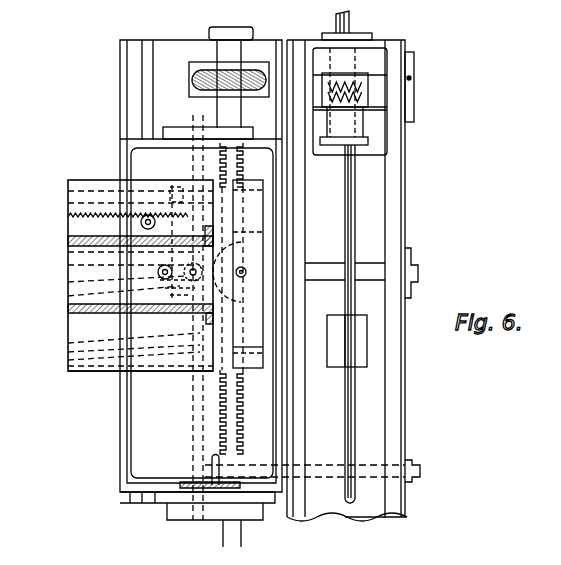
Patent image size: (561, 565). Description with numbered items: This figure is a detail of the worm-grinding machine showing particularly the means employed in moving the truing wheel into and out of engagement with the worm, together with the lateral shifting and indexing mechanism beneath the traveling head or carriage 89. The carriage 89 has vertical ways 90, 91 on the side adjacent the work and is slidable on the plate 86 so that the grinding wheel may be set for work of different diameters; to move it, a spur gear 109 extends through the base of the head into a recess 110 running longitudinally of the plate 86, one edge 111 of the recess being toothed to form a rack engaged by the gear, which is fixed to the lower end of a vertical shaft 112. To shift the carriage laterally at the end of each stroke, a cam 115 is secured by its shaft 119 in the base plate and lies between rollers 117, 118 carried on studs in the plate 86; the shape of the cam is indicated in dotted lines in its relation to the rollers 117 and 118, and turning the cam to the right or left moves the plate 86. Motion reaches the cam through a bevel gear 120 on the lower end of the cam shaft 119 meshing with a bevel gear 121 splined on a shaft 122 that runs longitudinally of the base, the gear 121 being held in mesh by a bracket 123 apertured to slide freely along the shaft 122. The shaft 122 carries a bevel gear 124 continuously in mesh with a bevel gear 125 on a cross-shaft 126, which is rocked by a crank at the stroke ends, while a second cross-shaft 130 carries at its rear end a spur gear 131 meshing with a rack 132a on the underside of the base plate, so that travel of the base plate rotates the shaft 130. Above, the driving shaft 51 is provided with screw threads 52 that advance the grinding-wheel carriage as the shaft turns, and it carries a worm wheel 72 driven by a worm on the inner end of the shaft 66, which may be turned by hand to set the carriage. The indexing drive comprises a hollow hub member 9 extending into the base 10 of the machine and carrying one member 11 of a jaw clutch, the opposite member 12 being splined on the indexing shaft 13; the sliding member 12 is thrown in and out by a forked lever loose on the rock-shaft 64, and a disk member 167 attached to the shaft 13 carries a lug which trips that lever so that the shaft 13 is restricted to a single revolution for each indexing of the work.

The hollow hub member 9 is at (352, 27).
The base 10 is at (397, 181).
The jaw clutch member 11 is at (360, 78).
The sliding clutch member 12 is at (365, 100).
The indexing shaft 13 is at (354, 158).
The driving shaft 51 is at (223, 528).
The screw threads 52 is at (239, 408).
The rock-shaft 64 is at (385, 120).
The shaft 66 is at (414, 76).
The worm wheel 72 is at (201, 70).
The plate 86 is at (235, 270).
The traveling head or carriage 89 is at (195, 318).
The vertical way 90 is at (248, 274).
The vertical way 91 is at (213, 228).
The spur gear 109 is at (165, 215).
The recess 110 is at (150, 222).
The toothed edge 111 is at (128, 205).
The vertical shaft 112 is at (140, 222).
The cam 115 is at (68, 249).
The roller 117 is at (68, 282).
The roller 118 is at (247, 270).
The cam shaft 119 is at (68, 296).
The bevel gear 120 is at (68, 266).
The bevel gear 121 is at (68, 312).
The shaft 122 is at (192, 387).
The bracket 123 is at (68, 344).
The bevel gear 124 is at (172, 480).
The bevel gear 125 is at (193, 455).
The cross-shaft 126 is at (416, 468).
The cross-shaft 130 is at (414, 270).
The spur gear 131 is at (72, 372).
The rack 132a is at (68, 364).
The disk member 167 is at (331, 147).